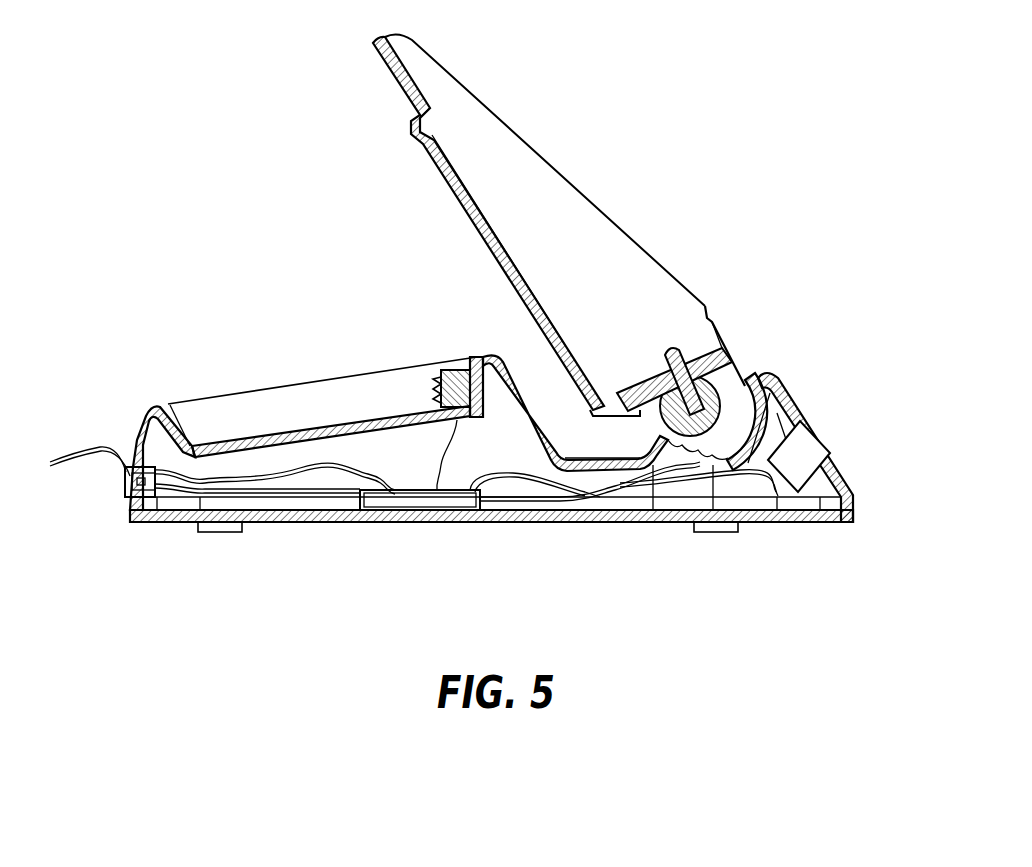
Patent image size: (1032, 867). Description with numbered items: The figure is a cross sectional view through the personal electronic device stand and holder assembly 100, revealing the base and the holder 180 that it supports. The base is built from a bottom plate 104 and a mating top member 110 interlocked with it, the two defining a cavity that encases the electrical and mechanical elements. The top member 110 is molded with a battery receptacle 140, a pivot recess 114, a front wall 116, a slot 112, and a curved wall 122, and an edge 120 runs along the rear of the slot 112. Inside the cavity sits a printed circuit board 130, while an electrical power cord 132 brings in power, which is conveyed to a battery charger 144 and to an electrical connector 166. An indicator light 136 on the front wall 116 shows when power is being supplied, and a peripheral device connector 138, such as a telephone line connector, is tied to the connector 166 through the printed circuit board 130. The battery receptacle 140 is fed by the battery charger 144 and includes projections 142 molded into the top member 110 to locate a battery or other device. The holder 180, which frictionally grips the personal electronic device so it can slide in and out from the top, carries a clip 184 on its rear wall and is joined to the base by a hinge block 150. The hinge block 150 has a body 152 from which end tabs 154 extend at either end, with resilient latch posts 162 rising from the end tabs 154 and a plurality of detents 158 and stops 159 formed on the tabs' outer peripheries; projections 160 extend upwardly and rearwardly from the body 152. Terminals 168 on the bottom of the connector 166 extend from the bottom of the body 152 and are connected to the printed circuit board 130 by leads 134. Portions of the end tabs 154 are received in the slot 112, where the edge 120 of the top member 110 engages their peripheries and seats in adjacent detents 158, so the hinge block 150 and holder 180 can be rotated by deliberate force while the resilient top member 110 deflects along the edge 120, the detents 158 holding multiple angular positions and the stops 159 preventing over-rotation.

The assembly 100 is at (757, 95).
The bottom plate 104 is at (280, 524).
The top member 110 is at (573, 518).
The slot 112 is at (670, 520).
The pivot recess 114 is at (521, 361).
The front wall 116 is at (803, 410).
The edge 120 is at (613, 455).
The curved wall 122 is at (786, 395).
The printed circuit board 130 is at (400, 516).
The electrical power cord 132 is at (108, 455).
The leads 134 is at (511, 518).
The indicator light 136 is at (803, 463).
The peripheral device connector 138 is at (112, 487).
The battery receptacle 140 is at (273, 371).
The projections 142 is at (193, 410).
The battery charger 144 is at (447, 378).
The hinge block 150 is at (746, 353).
The body 152 is at (768, 372).
The end tabs 154 is at (650, 515).
The detents 158 is at (613, 410).
The stops 159 is at (712, 512).
The projections 160 is at (637, 392).
The resilient latch posts 162 is at (707, 342).
The electrical connector 166 is at (678, 352).
The terminals 168 is at (750, 515).
The holder 180 is at (544, 124).
The clip 184 is at (432, 174).